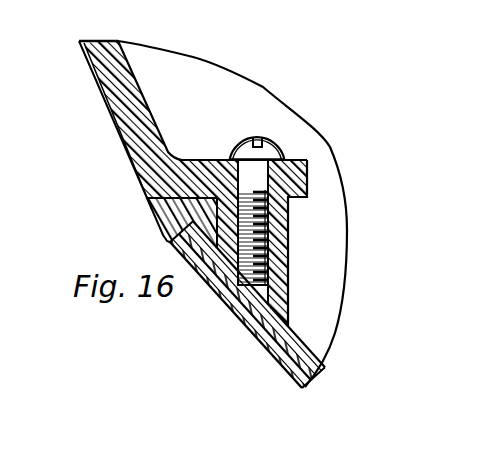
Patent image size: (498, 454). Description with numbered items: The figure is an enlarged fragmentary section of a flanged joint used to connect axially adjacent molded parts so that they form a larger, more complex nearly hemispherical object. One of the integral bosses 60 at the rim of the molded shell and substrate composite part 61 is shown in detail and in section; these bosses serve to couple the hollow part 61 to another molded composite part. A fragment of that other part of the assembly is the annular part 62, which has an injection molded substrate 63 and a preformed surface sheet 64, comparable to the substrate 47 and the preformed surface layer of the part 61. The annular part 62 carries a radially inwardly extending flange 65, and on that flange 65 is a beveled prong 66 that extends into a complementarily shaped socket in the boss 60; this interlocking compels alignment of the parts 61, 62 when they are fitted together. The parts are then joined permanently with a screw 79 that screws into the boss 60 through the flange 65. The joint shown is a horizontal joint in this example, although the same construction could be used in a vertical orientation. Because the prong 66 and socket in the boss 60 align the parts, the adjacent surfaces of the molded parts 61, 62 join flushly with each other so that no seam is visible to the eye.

The substrate 47 is at (297, 356).
The integral boss 60 is at (281, 253).
The molded shell and substrate composite part 61 is at (232, 330).
The annular part 62 is at (97, 129).
The injection molded substrate 63 is at (123, 80).
The preformed surface sheet 64 is at (127, 82).
The radially inwardly extending flange 65 is at (198, 158).
The beveled prong 66 is at (210, 215).
The screw 79 is at (269, 137).